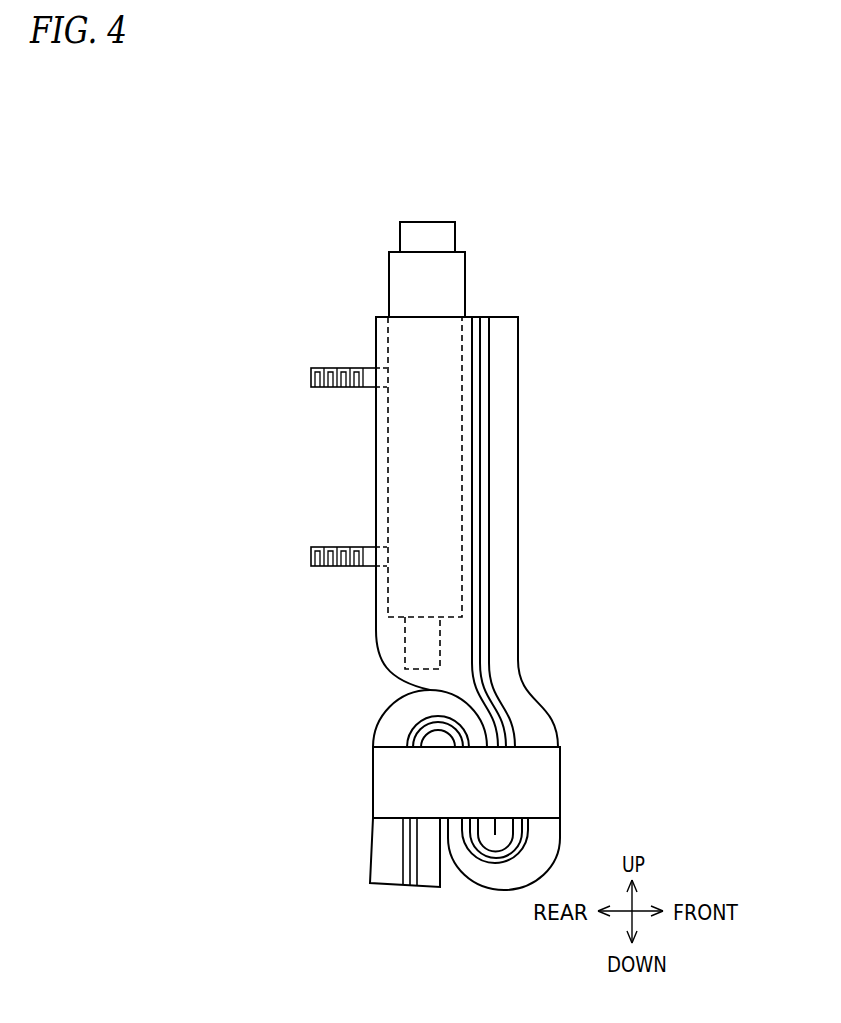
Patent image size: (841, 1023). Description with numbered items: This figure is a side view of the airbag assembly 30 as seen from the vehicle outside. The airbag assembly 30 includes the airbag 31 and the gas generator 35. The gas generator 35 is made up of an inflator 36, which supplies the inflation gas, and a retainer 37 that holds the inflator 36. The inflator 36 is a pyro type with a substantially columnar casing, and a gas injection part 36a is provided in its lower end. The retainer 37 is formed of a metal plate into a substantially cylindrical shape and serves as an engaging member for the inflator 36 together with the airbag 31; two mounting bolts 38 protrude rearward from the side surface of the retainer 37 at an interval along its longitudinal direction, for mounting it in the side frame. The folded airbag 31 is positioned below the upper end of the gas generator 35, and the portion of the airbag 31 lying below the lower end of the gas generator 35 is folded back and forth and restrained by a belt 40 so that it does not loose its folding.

The airbag assembly 30 is at (497, 219).
The airbag 31 is at (377, 608).
The gas generator 35 is at (320, 208).
The inflator 36 is at (417, 222).
The retainer 37 is at (389, 272).
The gas injection part 36a is at (412, 670).
The mounting bolts 38 is at (332, 368).
The belt 40 is at (553, 785).